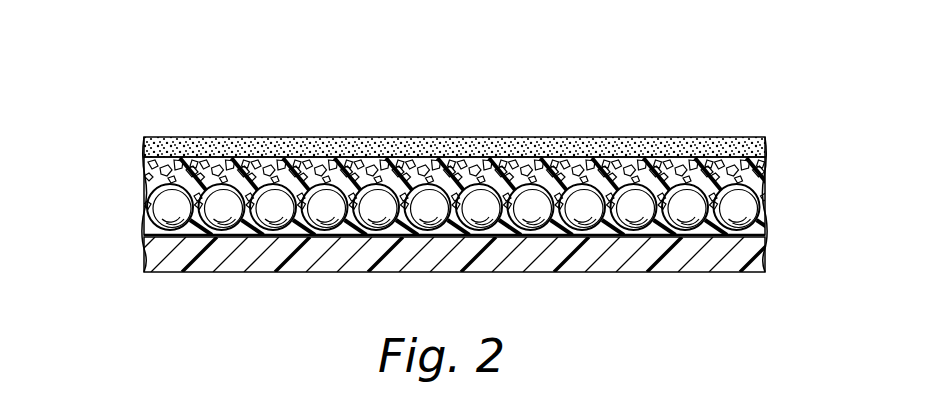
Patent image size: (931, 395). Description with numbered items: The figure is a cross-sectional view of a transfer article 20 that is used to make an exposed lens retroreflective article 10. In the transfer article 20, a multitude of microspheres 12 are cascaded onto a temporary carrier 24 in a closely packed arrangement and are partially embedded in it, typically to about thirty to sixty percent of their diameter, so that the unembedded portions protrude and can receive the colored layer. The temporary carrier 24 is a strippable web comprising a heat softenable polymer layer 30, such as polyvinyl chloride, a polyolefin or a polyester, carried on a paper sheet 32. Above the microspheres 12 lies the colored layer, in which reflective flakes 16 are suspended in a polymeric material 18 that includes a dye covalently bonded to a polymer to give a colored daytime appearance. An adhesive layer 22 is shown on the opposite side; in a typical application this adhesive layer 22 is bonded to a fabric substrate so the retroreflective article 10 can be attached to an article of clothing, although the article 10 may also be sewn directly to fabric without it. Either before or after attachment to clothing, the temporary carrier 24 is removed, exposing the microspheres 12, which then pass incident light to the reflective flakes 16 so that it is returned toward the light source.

The retroreflective article 10 is at (792, 138).
The microspheres 12 is at (372, 195).
The reflective flakes 16 is at (268, 165).
The polymeric material 18 is at (150, 172).
The transfer article 20 is at (640, 93).
The adhesive layer 22 is at (488, 146).
The temporary carrier 24 is at (778, 223).
The heat softenable polymer layer 30 is at (150, 232).
The paper sheet 32 is at (345, 272).